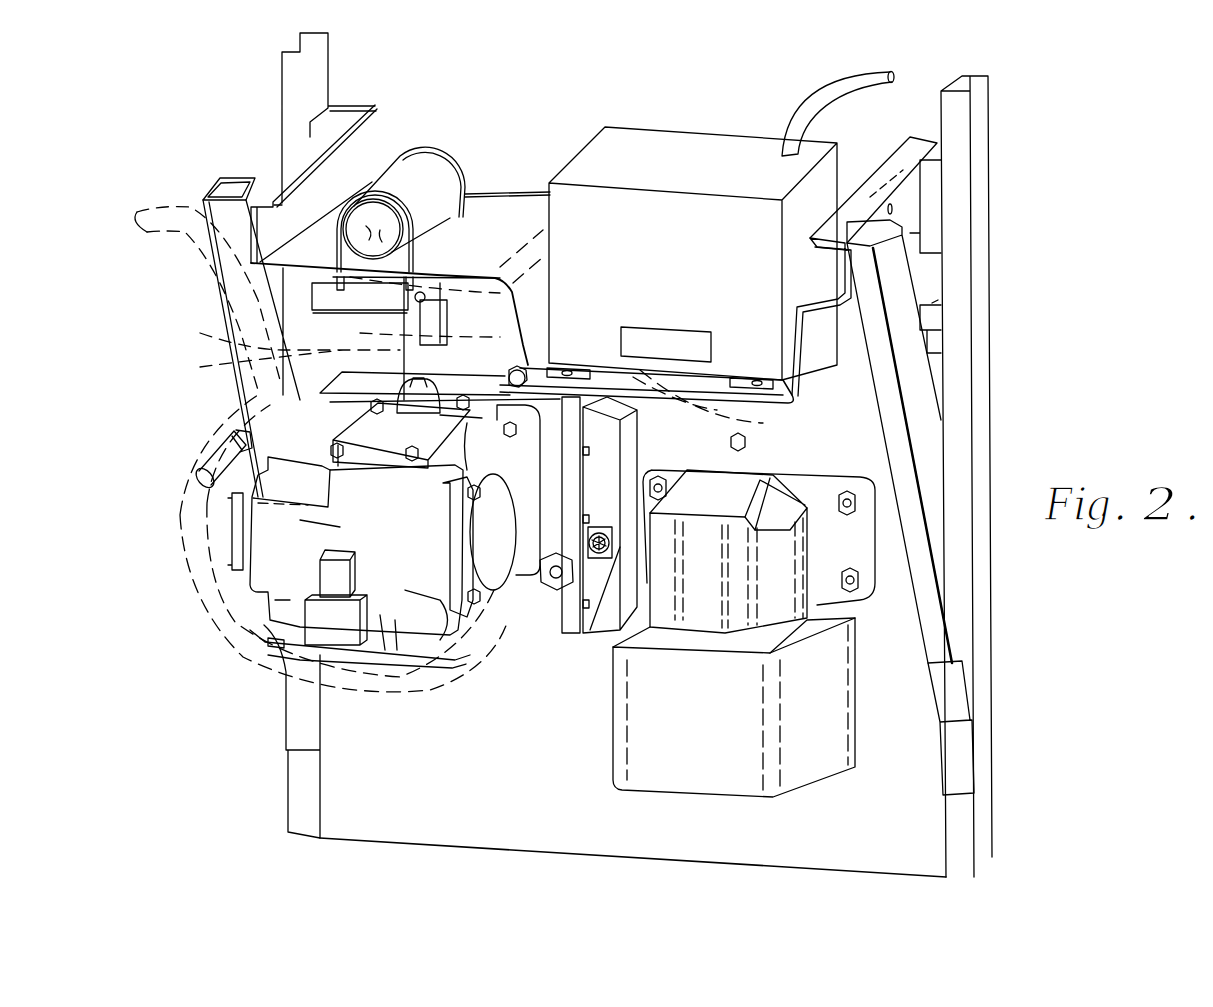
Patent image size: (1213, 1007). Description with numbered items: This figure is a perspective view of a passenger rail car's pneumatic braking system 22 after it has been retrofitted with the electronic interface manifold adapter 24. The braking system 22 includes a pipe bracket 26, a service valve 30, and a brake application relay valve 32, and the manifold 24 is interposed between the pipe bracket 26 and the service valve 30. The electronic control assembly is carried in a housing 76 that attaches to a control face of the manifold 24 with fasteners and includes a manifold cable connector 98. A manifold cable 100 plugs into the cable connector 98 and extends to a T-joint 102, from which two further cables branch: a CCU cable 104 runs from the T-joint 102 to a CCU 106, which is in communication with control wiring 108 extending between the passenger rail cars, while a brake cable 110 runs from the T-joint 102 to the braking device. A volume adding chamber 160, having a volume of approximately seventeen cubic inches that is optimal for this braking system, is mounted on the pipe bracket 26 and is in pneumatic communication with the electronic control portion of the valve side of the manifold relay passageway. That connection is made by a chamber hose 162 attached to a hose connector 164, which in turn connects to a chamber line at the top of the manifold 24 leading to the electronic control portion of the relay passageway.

The pneumatic braking system 22 is at (255, 683).
The electronic interface manifold adapter 24 is at (472, 385).
The pipe bracket 26 is at (486, 792).
The service valve 30 is at (413, 527).
The brake application relay valve 32 is at (703, 543).
The housing 76 is at (598, 445).
The manifold cable connector 98 is at (607, 557).
The manifold cable 100 is at (490, 647).
The T-joint 102 is at (236, 430).
The CCU cable 104 is at (258, 368).
The CCU 106 is at (680, 240).
The control wiring 108 is at (830, 88).
The brake cable 110 is at (183, 229).
The volume adding chamber 160 is at (433, 182).
The chamber hose 162 is at (223, 345).
The hose connector 164 is at (515, 357).